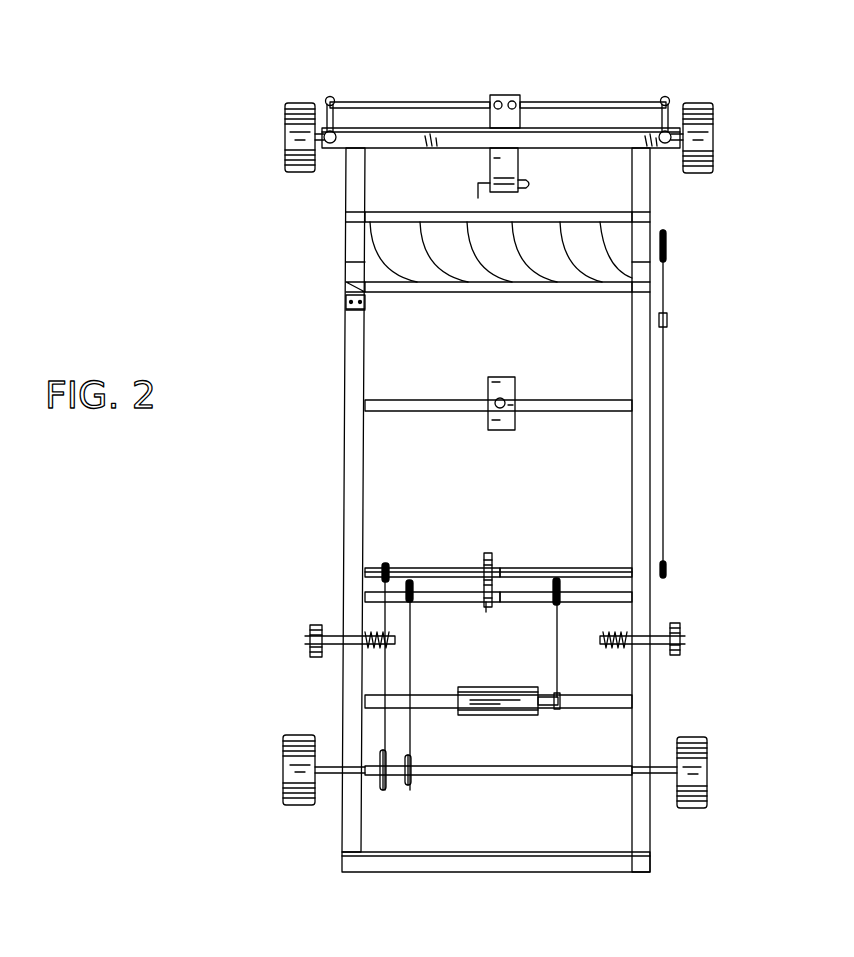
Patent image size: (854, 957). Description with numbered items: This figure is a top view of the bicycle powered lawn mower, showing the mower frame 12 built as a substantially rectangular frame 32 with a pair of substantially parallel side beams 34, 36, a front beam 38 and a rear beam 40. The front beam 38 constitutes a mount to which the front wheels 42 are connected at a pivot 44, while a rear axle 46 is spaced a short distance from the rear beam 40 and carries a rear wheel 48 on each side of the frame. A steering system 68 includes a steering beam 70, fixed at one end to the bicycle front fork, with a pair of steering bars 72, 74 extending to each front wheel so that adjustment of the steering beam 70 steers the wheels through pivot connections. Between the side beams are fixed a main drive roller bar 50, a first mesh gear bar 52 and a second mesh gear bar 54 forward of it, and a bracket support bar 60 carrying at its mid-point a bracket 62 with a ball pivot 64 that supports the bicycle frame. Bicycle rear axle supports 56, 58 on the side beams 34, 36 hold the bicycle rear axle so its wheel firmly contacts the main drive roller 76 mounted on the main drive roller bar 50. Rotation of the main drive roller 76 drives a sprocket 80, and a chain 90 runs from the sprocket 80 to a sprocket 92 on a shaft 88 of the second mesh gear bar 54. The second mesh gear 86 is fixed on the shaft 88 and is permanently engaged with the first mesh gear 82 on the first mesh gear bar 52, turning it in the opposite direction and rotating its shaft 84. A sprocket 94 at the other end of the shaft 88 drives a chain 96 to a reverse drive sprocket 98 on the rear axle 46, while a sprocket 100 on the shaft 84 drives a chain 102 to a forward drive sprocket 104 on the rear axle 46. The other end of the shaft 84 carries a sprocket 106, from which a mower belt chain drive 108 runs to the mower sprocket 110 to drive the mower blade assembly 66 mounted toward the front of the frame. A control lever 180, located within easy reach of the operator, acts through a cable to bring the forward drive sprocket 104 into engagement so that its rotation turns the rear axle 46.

The mower frame 12 is at (300, 830).
The rectangular frame 32 is at (548, 862).
The side beam 34 is at (350, 366).
The side beam 36 is at (640, 450).
The front beam 38 is at (432, 150).
The rear beam 40 is at (432, 862).
The front wheels 42 is at (300, 106).
The pivot 44 is at (322, 136).
The rear axle 46 is at (498, 792).
The rear wheel 48 is at (295, 770).
The main drive roller bar 50 is at (625, 698).
The first mesh gear bar 52 is at (375, 570).
The second mesh gear bar 54 is at (375, 596).
The bicycle rear axle support 56 is at (310, 640).
The bicycle rear axle support 58 is at (682, 640).
The bracket support bar 60 is at (580, 403).
The bracket 62 is at (500, 377).
The ball pivot 64 is at (496, 400).
The mower blade assembly 66 is at (600, 245).
The steering system 68 is at (522, 78).
The steering beam 70 is at (490, 170).
The steering bar 72 is at (485, 104).
The steering bar 74 is at (586, 103).
The main drive roller 76 is at (496, 716).
The sprocket 80 is at (556, 710).
The first mesh gear 82 is at (488, 555).
The shaft 84 is at (585, 570).
The second mesh gear 86 is at (487, 607).
The shaft 88 is at (556, 580).
The chain 90 is at (557, 656).
The sprocket 92 is at (600, 597).
The sprocket 94 is at (411, 580).
The chain 96 is at (411, 730).
The reverse drive sprocket 98 is at (412, 786).
The sprocket 100 is at (386, 566).
The chain 102 is at (380, 735).
The forward drive sprocket 104 is at (383, 790).
The sprocket 106 is at (665, 565).
The mower belt chain drive 108 is at (663, 345).
The mower sprocket 110 is at (668, 250).
The control lever 180 is at (350, 302).